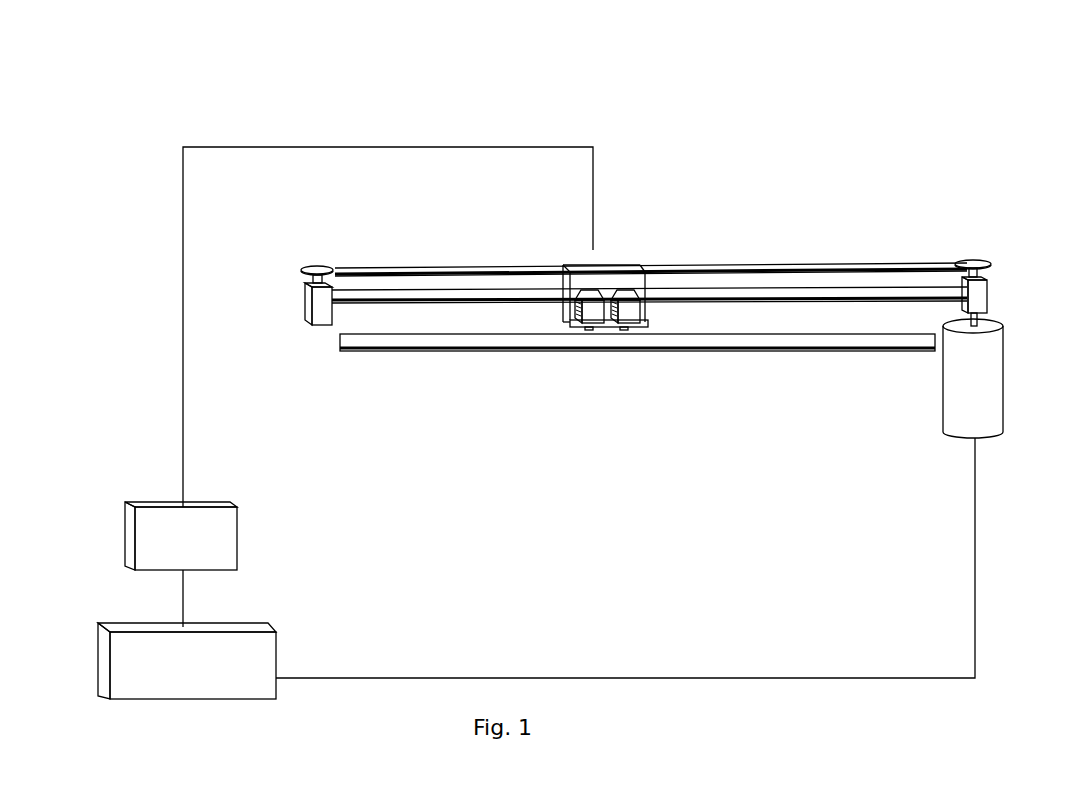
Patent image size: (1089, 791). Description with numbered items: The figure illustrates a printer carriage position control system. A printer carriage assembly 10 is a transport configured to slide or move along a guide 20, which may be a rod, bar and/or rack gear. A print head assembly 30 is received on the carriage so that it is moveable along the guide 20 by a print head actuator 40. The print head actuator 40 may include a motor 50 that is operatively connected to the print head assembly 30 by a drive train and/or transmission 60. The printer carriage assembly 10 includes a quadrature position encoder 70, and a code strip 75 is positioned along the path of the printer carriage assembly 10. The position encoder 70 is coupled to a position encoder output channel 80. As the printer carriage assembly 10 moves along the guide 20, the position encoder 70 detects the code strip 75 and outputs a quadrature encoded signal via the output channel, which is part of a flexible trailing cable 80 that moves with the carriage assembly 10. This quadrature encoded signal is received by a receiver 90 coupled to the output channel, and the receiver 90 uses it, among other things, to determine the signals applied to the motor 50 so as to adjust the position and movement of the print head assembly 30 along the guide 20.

The printer carriage assembly 10 is at (597, 268).
The guide 20 is at (762, 267).
The print head assembly 30 is at (622, 294).
The print head actuator 40 is at (202, 702).
The motor 50 is at (1005, 427).
The drive train and/or transmission 60 is at (888, 262).
The quadrature position encoder 70 is at (577, 334).
The code strip 75 is at (747, 349).
The position encoder output channel / flexible trailing cable 80 is at (308, 147).
The receiver 90 is at (146, 505).